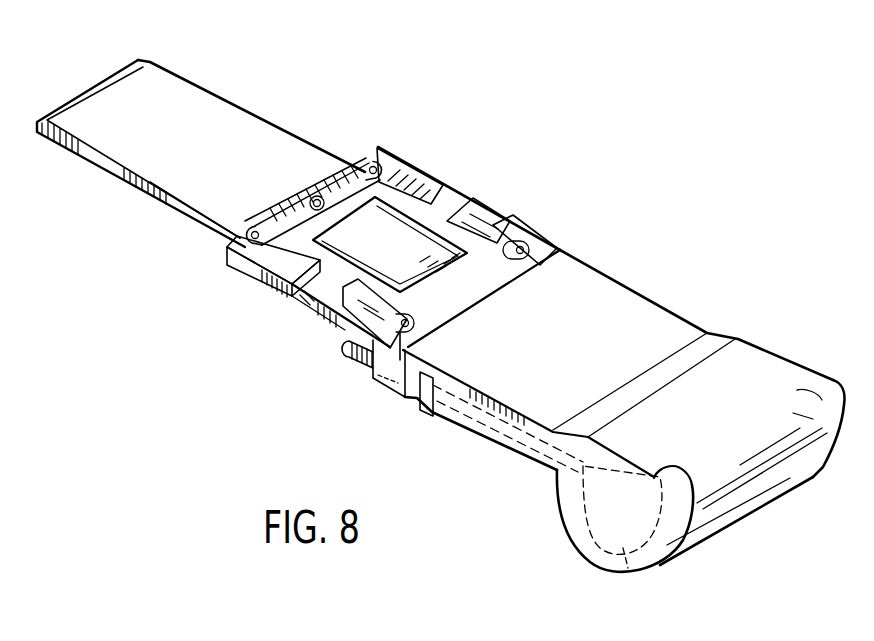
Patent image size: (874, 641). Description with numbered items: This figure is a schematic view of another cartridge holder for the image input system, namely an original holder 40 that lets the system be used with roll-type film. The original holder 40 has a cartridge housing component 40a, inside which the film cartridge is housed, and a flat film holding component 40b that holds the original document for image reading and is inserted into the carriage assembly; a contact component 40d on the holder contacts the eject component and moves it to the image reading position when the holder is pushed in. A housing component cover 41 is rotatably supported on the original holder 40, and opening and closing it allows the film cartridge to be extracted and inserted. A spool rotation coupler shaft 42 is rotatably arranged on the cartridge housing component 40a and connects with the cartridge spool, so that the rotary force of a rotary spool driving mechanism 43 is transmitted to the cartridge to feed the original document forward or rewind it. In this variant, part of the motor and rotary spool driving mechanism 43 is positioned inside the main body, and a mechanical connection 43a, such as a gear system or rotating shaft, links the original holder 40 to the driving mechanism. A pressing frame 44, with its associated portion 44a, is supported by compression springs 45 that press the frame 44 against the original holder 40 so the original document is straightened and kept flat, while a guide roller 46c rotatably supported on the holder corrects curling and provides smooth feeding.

The original holder 40 is at (508, 454).
The cartridge housing component 40a is at (700, 523).
The film holding component 40b is at (187, 217).
The contact component 40d is at (245, 246).
The housing component cover 41 is at (648, 337).
The spool rotation coupler shaft 42 is at (662, 466).
The rotary spool driving mechanism 43 is at (625, 570).
The mechanical connection 43a is at (440, 404).
The pressing frame 44 is at (432, 210).
The frame pads 44a is at (457, 193).
The compression springs 45 is at (272, 228).
The guide roller 46c is at (110, 78).